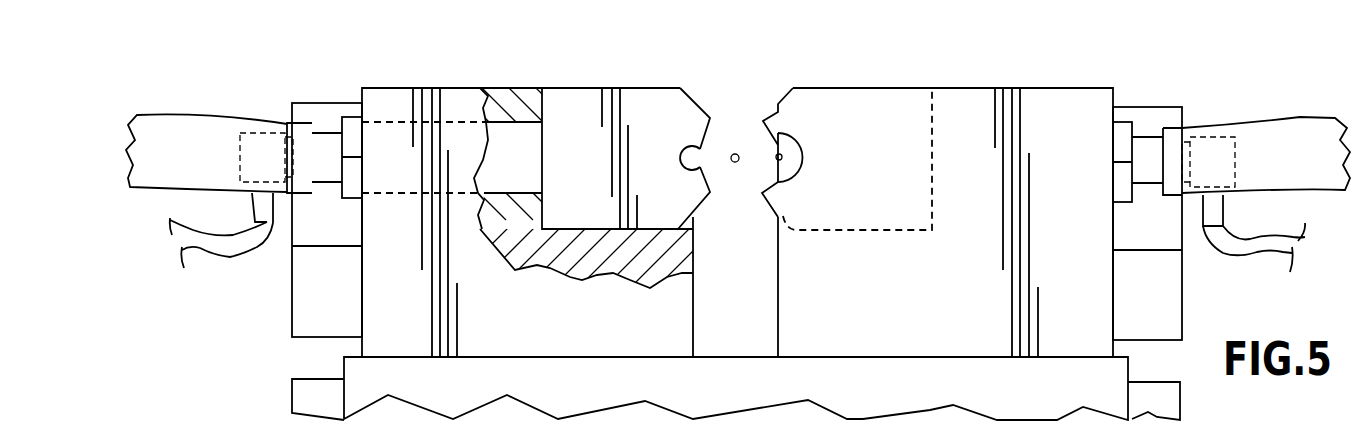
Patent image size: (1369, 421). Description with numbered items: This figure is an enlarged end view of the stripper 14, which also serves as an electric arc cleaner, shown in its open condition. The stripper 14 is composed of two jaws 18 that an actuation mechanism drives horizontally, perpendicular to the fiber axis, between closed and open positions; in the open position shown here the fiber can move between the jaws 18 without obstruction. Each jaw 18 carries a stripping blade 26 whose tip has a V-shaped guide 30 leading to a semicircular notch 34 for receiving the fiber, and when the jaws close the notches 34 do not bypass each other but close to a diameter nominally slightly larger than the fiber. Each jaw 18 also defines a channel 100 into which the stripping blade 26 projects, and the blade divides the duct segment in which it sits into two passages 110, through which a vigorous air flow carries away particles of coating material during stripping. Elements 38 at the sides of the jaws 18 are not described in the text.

The stripper 14 is at (736, 214).
The jaws 18 is at (461, 88).
The stripping blade 26 is at (652, 108).
The V-shaped guide 30 is at (707, 138).
The semicircular notch 34 is at (767, 158).
The clamp actuator 38 is at (330, 103).
The channel 100 is at (803, 160).
The passages 110 is at (513, 158).